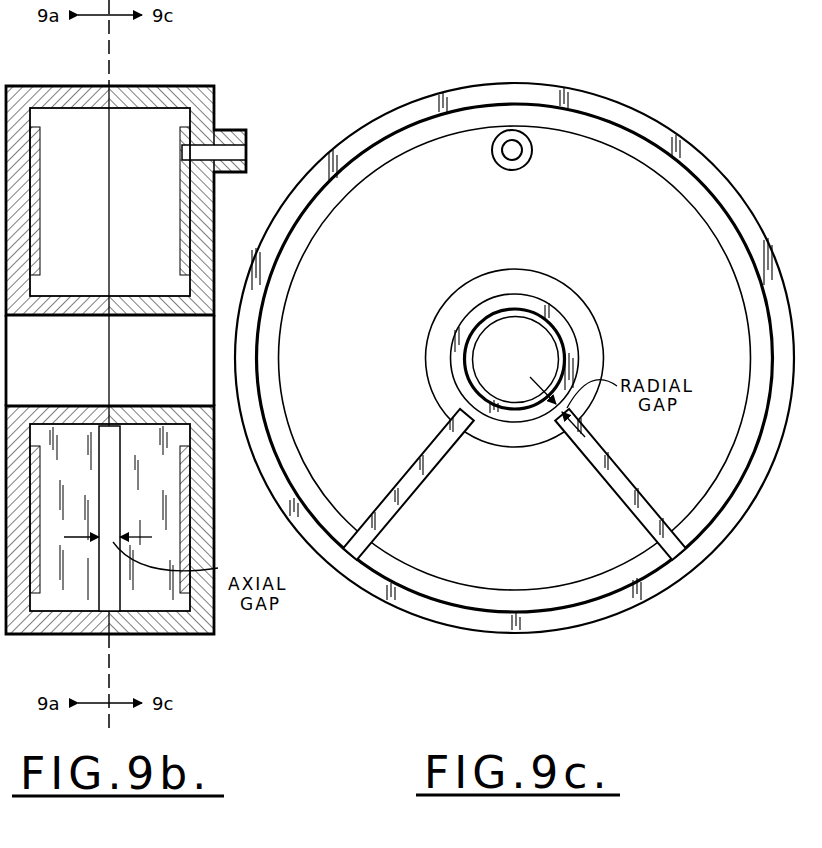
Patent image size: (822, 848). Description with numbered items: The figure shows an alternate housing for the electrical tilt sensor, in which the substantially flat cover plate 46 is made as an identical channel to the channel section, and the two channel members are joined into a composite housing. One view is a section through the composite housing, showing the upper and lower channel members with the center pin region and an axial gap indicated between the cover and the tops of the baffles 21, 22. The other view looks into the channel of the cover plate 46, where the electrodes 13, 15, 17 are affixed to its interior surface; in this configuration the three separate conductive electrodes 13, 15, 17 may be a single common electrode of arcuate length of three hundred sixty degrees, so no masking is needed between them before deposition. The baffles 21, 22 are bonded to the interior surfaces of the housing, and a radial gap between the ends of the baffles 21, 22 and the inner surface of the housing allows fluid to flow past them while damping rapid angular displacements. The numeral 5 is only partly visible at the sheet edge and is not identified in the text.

In FIG. 9b, the housing 5 is at (17, 86).
In FIG. 9b, the cover plate 46 is at (190, 86).
In FIG. 9c, the cover plate 46 is at (617, 104).
In FIG. 9b, the baffle 22 is at (62, 600).
In FIG. 9c, the baffle 22 is at (703, 556).
In FIG. 9b, the baffle 21 is at (152, 600).
In FIG. 9c, the baffle 21 is at (350, 555).
In FIG. 9c, the arcuately shaped electrode 13 is at (514, 358).
In FIG. 9c, the arcuately shaped electrode 15 is at (514, 358).
In FIG. 9c, the auxiliary electrode 17 is at (604, 186).